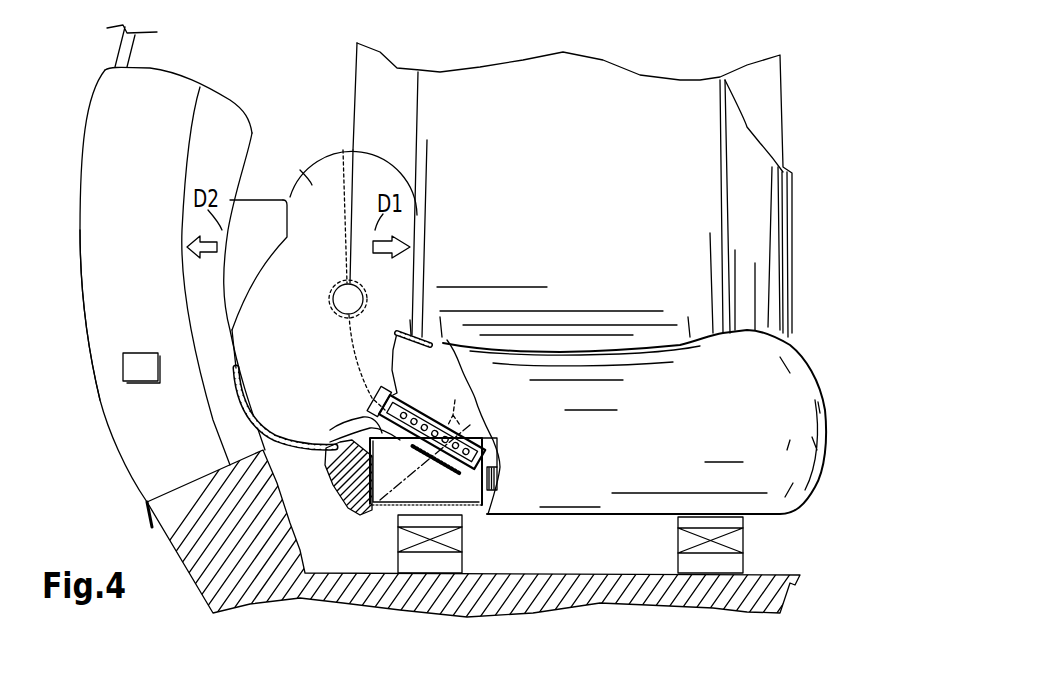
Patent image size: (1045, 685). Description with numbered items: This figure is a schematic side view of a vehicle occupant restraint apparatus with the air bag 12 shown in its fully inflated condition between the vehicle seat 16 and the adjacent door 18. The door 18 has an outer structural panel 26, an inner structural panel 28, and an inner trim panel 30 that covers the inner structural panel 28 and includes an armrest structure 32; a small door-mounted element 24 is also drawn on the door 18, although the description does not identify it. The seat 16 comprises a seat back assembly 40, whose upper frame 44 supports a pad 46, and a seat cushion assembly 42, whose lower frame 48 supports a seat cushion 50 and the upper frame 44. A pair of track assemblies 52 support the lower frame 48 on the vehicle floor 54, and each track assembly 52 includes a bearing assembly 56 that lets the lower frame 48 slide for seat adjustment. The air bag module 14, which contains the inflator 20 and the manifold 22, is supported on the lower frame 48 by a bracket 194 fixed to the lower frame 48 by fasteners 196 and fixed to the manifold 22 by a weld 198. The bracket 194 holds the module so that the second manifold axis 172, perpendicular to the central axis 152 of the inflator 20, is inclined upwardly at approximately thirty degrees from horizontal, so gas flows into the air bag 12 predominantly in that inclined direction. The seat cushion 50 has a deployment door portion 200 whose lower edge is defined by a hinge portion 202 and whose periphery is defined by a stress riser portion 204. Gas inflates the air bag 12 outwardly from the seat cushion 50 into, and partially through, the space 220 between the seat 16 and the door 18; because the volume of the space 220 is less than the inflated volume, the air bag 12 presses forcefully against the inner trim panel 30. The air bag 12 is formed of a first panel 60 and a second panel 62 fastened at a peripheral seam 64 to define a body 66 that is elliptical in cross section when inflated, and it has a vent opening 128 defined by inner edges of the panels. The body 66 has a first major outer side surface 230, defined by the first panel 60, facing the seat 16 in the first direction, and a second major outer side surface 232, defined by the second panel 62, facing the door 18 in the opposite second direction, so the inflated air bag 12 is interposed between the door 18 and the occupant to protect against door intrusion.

The inflatable vehicle occupant restraint 12 is at (330, 153).
The air bag module 14 is at (440, 370).
The vehicle seat 16 is at (350, 75).
The door 18 is at (80, 142).
The inflator 20 is at (417, 395).
The manifold 22 is at (490, 479).
The door handle 24 is at (137, 368).
The outer structural panel 26 is at (82, 288).
The inner structural panel 28 is at (180, 267).
The inner trim panel 30 is at (227, 100).
The armrest structure 32 is at (253, 200).
The seat back assembly 40 is at (792, 263).
The seat cushion assembly 42 is at (802, 342).
The upper frame 44 is at (765, 97).
The pad 46 is at (760, 143).
The lower frame 48 is at (500, 458).
The seat cushion 50 is at (802, 400).
The track assemblies 52 is at (477, 534).
The vehicle floor 54 is at (653, 573).
The bearing assembly 56 is at (457, 540).
The first panel 60 is at (375, 165).
The second panel 62 is at (307, 177).
The peripheral seam 64 is at (357, 182).
The body 66 is at (343, 157).
The second vent opening 128 is at (334, 283).
The central axis 152 is at (457, 400).
The second manifold axis 172 is at (457, 427).
The bracket 194 is at (378, 500).
The fasteners 196 is at (360, 512).
The weld 198 is at (470, 458).
The deployment door portion 200 is at (272, 437).
The hinge portion 202 is at (332, 446).
The stress riser portion 204 is at (408, 302).
The space 220 is at (310, 335).
The first major outer side surface 230 is at (390, 183).
The second major outer side surface 232 is at (293, 190).